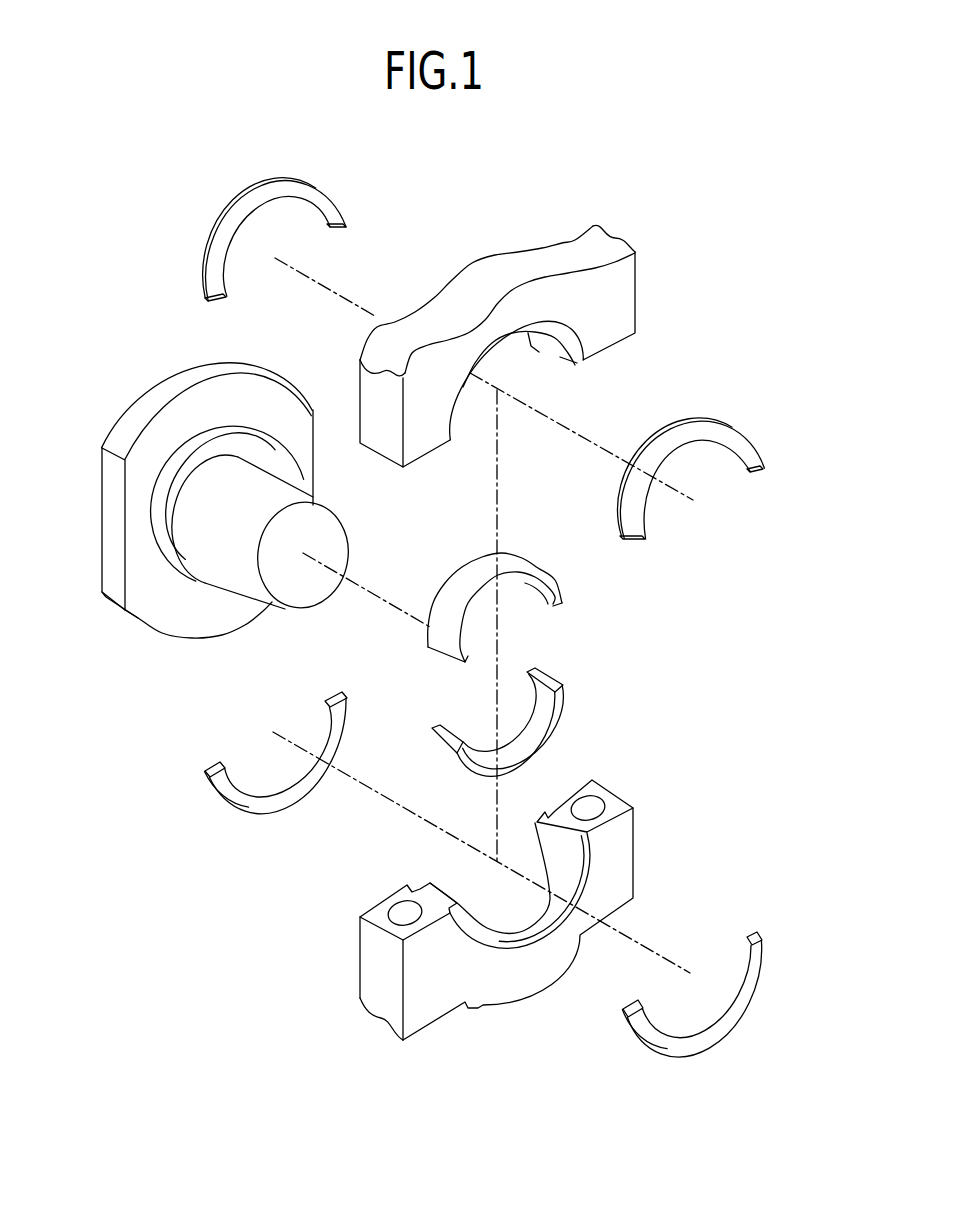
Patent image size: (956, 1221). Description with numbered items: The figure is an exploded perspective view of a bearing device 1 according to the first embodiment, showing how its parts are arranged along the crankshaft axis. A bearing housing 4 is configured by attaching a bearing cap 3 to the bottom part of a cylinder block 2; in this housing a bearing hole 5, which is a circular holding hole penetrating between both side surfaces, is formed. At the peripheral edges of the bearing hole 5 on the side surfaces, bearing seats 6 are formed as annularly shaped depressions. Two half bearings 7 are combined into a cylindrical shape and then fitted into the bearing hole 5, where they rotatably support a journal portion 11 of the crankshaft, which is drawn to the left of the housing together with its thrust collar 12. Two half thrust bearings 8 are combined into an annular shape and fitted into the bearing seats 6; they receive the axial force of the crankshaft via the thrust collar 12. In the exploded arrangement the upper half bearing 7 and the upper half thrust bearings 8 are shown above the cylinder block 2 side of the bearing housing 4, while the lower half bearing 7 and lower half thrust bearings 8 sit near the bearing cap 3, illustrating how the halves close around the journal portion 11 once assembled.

The bearing device 1 is at (596, 172).
The cylinder block 2 is at (628, 291).
The bearing cap 3 is at (633, 895).
The bearing housing 4 is at (494, 632).
The bearing hole 5 is at (500, 913).
The bearing seat 6 is at (567, 352).
The half bearing 7 is at (477, 567).
The half thrust bearing 8 is at (322, 197).
The journal portion 11 is at (230, 548).
The thrust collar 12 is at (173, 530).